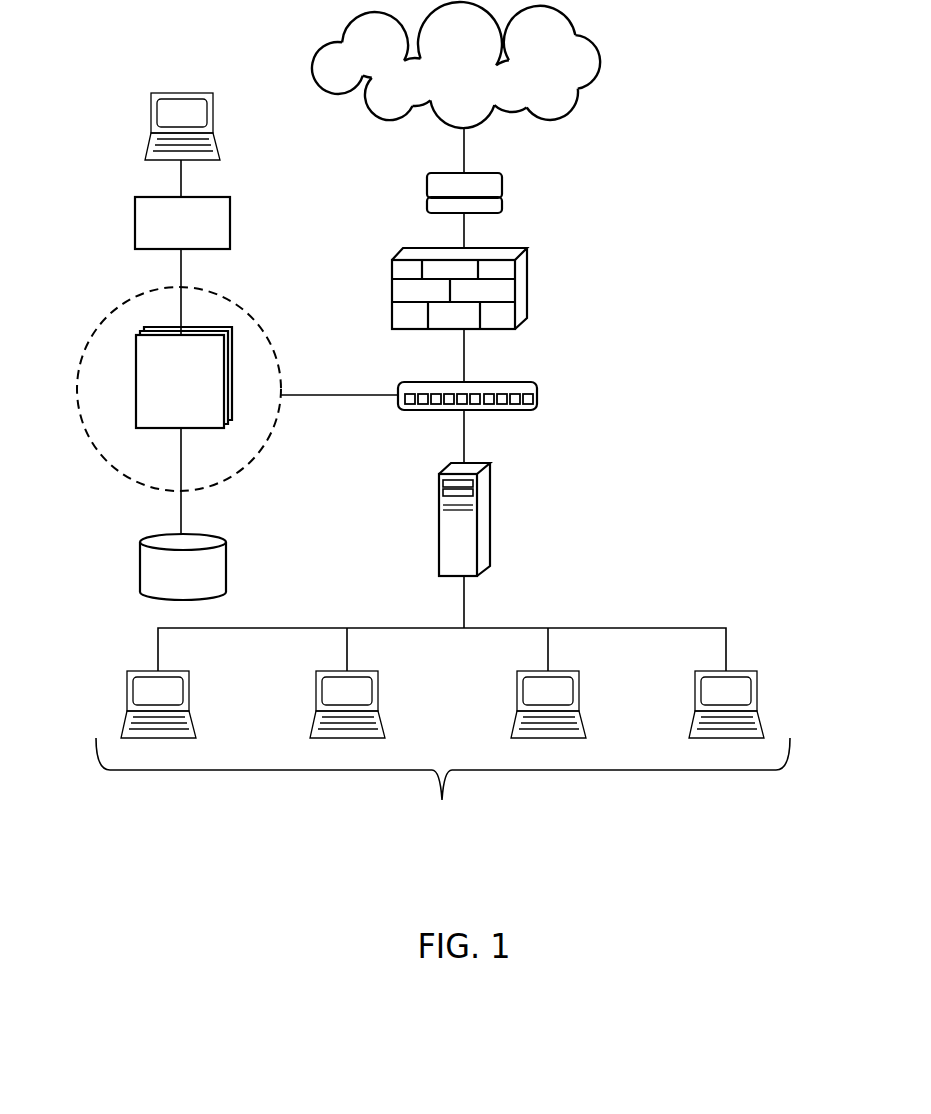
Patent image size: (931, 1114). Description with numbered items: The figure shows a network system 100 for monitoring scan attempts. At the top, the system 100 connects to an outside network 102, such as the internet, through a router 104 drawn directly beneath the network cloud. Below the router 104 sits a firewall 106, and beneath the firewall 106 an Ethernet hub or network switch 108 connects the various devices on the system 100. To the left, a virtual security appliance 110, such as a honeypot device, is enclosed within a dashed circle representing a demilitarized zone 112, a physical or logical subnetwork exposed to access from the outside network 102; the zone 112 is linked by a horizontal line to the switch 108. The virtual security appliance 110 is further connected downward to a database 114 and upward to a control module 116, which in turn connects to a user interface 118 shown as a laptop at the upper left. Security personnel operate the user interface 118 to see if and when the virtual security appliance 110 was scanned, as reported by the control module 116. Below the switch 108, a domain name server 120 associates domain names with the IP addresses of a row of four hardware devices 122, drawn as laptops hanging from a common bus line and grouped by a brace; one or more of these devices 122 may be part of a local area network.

The network system 100 is at (118, 829).
The network 102 is at (436, 90).
The router 104 is at (502, 183).
The firewall 106 is at (528, 265).
The network switch 108 is at (540, 395).
The virtual security appliance 110 is at (164, 411).
The demilitarized zone 112 is at (212, 288).
The database 114 is at (167, 582).
The control module 116 is at (166, 238).
The user interface 118 is at (167, 90).
The domain name server 120 is at (493, 508).
The hardware devices 122 is at (443, 739).